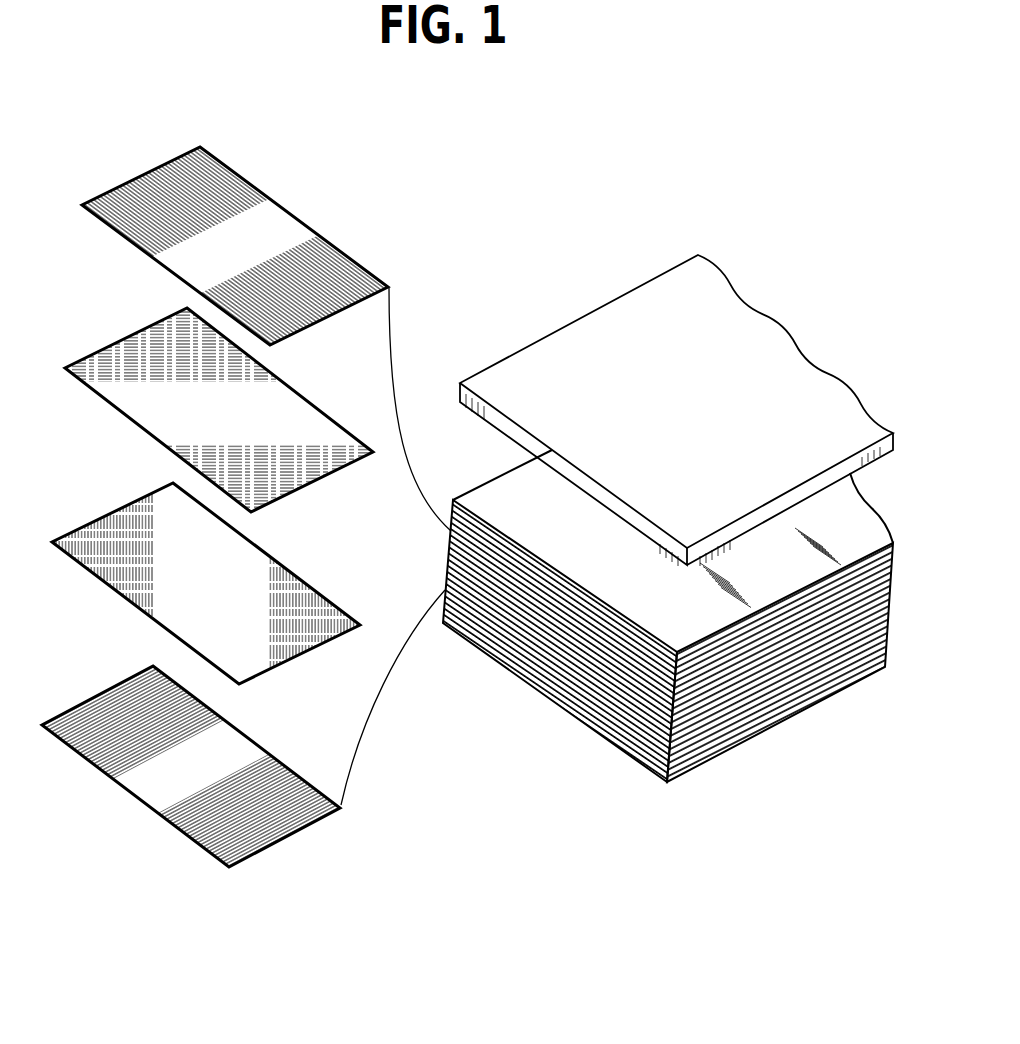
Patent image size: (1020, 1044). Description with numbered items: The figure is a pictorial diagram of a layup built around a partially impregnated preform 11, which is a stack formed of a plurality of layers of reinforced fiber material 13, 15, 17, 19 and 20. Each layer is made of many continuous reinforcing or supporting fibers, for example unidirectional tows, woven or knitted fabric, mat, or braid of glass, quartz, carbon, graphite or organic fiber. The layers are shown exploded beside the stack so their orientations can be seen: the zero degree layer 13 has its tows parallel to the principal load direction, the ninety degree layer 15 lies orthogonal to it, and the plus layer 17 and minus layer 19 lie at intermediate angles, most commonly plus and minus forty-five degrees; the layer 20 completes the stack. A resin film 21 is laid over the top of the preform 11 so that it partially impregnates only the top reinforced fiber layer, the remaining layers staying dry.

The partially impregnated preform 11 is at (577, 725).
The layer of reinforced fiber material 13 is at (280, 842).
The layer of reinforced fiber material 15 is at (137, 175).
The layer of reinforced fiber material 17 is at (290, 662).
The layer of reinforced fiber material 19 is at (310, 485).
The layer of reinforced fiber material 20 is at (873, 462).
The resin film 21 is at (747, 305).